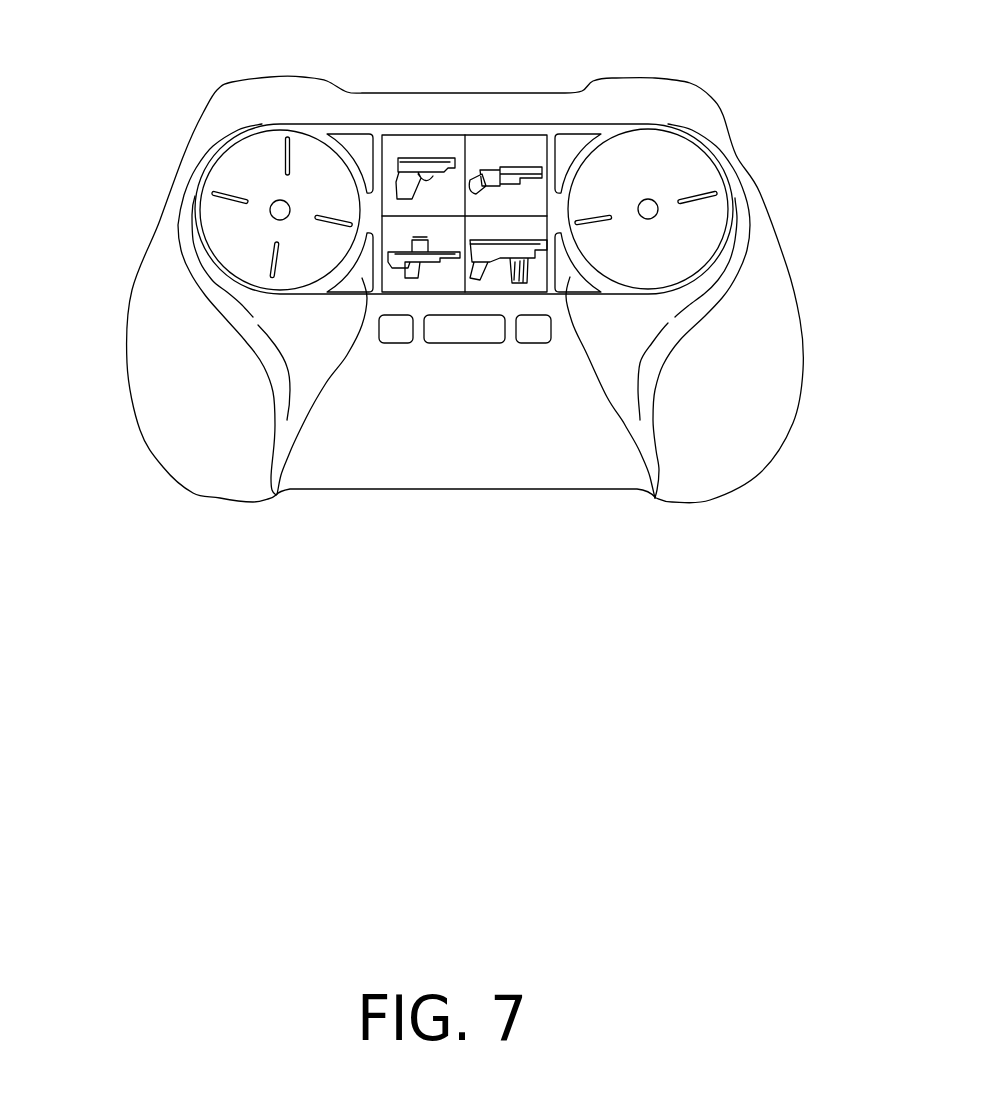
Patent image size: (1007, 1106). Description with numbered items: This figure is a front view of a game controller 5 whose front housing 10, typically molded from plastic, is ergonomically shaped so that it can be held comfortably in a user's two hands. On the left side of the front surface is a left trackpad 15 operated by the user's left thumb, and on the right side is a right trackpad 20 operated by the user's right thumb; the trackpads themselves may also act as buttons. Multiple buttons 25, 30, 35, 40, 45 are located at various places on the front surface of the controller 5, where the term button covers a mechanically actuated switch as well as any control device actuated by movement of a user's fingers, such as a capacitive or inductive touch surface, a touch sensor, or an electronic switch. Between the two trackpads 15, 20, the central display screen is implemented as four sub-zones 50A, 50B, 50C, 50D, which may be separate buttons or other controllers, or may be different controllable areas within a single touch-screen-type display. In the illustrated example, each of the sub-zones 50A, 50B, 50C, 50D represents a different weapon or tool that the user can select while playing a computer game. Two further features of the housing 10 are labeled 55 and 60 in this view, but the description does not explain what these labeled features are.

The game controller 5 is at (116, 548).
The front housing 10 is at (213, 506).
The left trackpad 15 is at (263, 163).
The right trackpad 20 is at (661, 166).
The button 25 is at (356, 142).
The button 30 is at (571, 142).
The button 35 is at (398, 343).
The button 40 is at (533, 343).
The button 45 is at (478, 343).
The display screen sub-zone 50A is at (441, 160).
The display screen sub-zone 50B is at (518, 162).
The display screen sub-zone 50C is at (397, 261).
The display screen sub-zone 50D is at (523, 265).
The left lower button 55 is at (278, 497).
The right lower button 60 is at (655, 499).